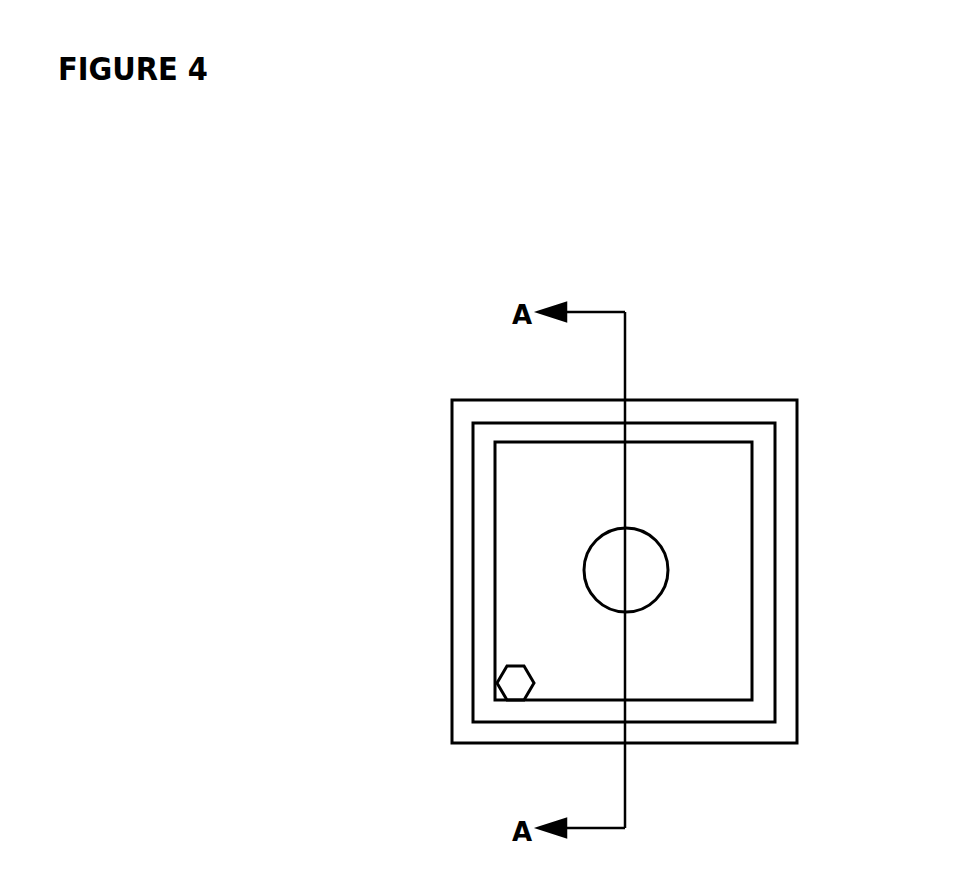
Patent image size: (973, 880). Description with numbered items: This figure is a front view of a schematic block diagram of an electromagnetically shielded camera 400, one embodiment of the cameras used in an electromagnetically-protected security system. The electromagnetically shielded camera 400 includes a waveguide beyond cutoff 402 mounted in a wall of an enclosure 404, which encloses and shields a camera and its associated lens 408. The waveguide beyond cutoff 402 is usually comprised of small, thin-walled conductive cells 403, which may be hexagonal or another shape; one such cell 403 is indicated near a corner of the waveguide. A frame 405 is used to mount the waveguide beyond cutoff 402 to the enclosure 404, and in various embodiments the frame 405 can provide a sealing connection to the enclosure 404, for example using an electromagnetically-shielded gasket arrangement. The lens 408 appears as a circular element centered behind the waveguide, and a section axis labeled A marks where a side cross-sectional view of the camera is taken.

The electromagnetically shielded camera 400 is at (398, 749).
The waveguide beyond cutoff 402 is at (647, 440).
The cells 403 is at (497, 662).
The enclosure 404 is at (797, 568).
The frame 405 is at (688, 420).
The lens 408 is at (578, 566).